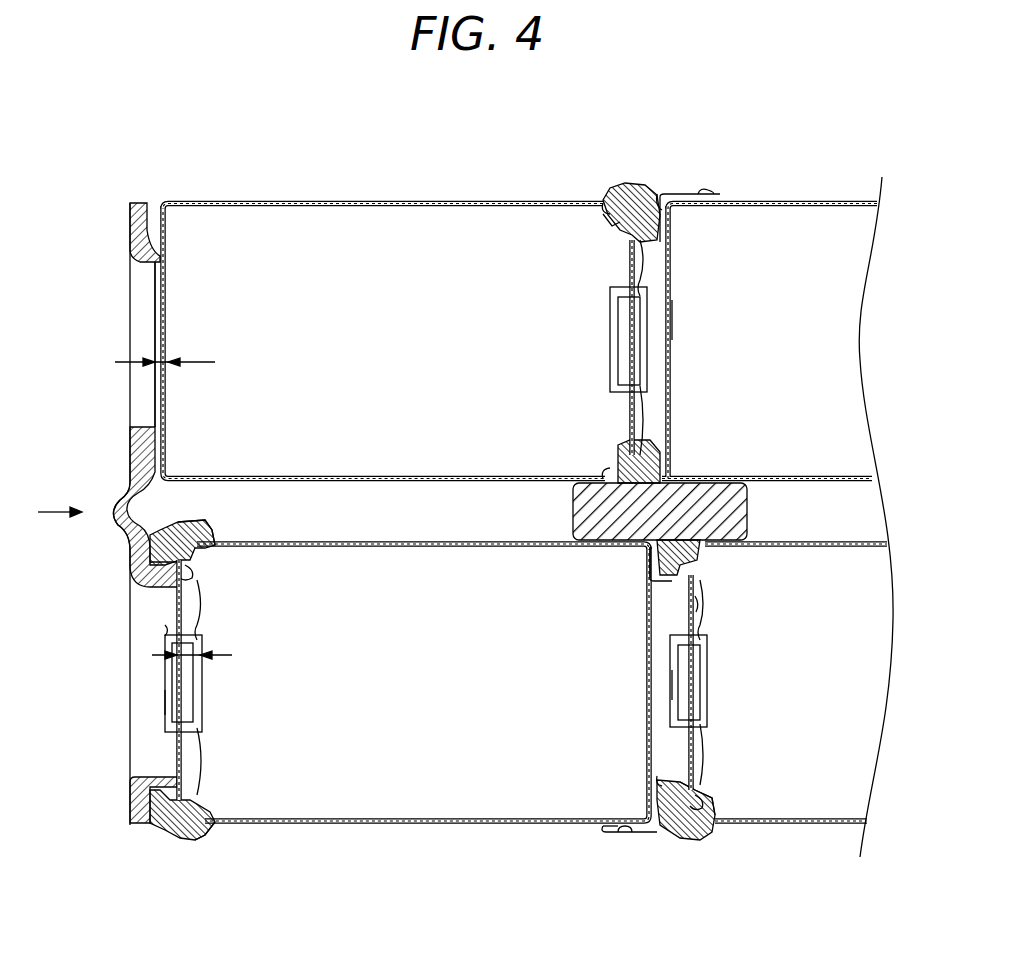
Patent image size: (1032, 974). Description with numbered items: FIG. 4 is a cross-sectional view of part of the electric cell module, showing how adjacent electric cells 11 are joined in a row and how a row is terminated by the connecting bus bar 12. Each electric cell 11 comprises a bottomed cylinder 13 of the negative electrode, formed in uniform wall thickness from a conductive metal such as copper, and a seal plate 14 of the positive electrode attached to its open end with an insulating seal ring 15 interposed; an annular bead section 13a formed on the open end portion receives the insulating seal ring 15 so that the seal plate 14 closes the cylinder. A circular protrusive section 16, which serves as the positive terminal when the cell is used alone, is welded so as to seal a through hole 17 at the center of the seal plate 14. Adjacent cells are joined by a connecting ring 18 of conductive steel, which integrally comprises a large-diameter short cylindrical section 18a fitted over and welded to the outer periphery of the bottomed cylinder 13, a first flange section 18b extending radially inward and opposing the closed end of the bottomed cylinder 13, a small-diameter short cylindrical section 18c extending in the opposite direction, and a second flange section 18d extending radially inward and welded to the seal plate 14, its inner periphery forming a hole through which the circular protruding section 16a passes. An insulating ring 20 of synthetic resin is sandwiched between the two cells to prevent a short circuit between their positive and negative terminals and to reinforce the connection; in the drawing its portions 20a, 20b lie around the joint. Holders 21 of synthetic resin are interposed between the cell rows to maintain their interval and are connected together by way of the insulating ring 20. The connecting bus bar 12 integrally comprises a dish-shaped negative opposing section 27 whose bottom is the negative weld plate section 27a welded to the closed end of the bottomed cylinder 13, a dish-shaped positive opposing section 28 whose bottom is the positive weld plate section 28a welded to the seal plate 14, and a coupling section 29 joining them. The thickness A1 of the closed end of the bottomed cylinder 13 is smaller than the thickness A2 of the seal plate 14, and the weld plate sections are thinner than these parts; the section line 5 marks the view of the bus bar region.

The electric cell 11 is at (478, 195).
The connecting bus bar 12 is at (126, 212).
The bottomed cylinder 13 is at (286, 201).
The annular bead section 13a is at (190, 840).
The seal plate 14 is at (612, 378).
The insulating seal ring 15 is at (612, 226).
The circular protrusive section 16 is at (618, 292).
The circular protruding section 16a is at (672, 320).
The through hole 17 is at (615, 342).
The connecting ring 18 is at (672, 190).
The large-diameter short cylindrical section 18a is at (612, 824).
The first flange section 18b is at (650, 562).
The small-diameter short cylindrical section 18c is at (663, 782).
The second flange section 18d is at (698, 603).
The insulating ring 20 is at (626, 190).
The gasket portion 20a is at (210, 537).
The gasket portion 20b is at (196, 572).
The holder 21 is at (750, 506).
The negative opposing section 27 is at (143, 203).
The negative weld plate section 27a is at (160, 283).
The positive opposing section 28 is at (130, 828).
The positive weld plate section 28a is at (166, 628).
The coupling section 29 is at (118, 525).
The thickness of the closed end of the bottomed cylinder A1 is at (170, 368).
The thickness of the seal plate A2 is at (205, 663).
The section view indicator 5 is at (60, 493).